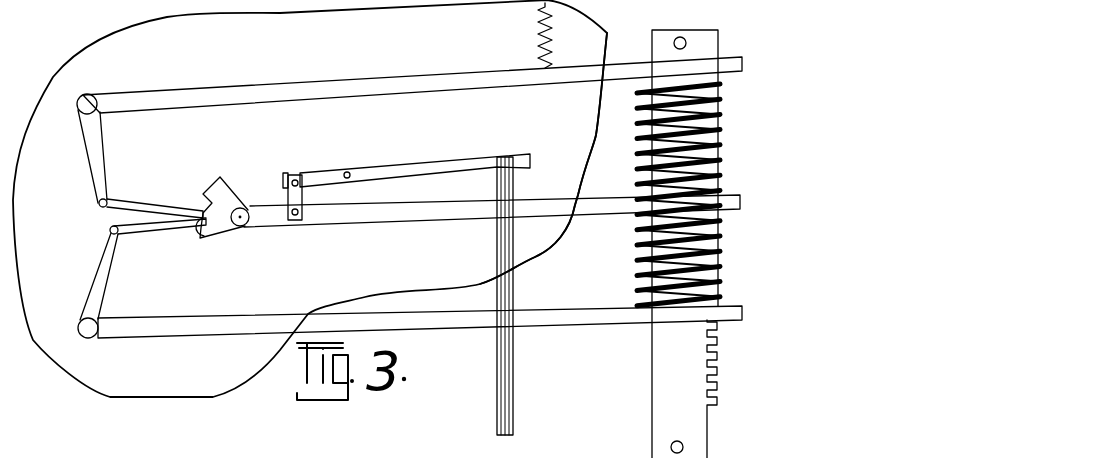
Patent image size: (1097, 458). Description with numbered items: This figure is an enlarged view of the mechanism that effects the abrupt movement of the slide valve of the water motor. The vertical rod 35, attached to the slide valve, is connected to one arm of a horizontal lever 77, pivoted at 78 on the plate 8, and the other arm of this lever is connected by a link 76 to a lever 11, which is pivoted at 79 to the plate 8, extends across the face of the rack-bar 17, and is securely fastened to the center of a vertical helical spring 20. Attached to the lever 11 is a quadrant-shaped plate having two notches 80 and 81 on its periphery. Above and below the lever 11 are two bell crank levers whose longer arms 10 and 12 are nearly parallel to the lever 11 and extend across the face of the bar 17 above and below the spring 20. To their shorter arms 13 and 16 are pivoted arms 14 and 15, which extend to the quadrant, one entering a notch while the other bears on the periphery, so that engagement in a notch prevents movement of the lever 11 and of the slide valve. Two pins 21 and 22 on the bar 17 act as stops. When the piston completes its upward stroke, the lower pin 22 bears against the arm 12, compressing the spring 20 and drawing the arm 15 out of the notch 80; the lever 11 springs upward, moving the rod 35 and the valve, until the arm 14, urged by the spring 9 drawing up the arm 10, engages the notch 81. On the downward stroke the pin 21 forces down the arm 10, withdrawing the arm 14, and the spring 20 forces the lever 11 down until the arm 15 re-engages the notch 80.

The plate 8 is at (310, 198).
The spring 9 is at (536, 42).
The longer arm 10 is at (329, 90).
The lever 11 is at (492, 223).
The longer arm 12 is at (410, 314).
The shorter arm 13 is at (75, 158).
The arm 14 is at (155, 193).
The arm 15 is at (158, 238).
The shorter arm 16 is at (89, 276).
The rack-bar 17 is at (685, 244).
The vertical helical spring 20 is at (595, 148).
The upper pin 21 is at (686, 43).
The lower pin 22 is at (683, 447).
The vertical rod 35 is at (487, 296).
The link 76 is at (288, 197).
The horizontal lever 77 is at (415, 165).
The pivot 78 is at (350, 167).
The pivot 79 is at (243, 225).
The notch 80 is at (206, 233).
The notch 81 is at (208, 194).